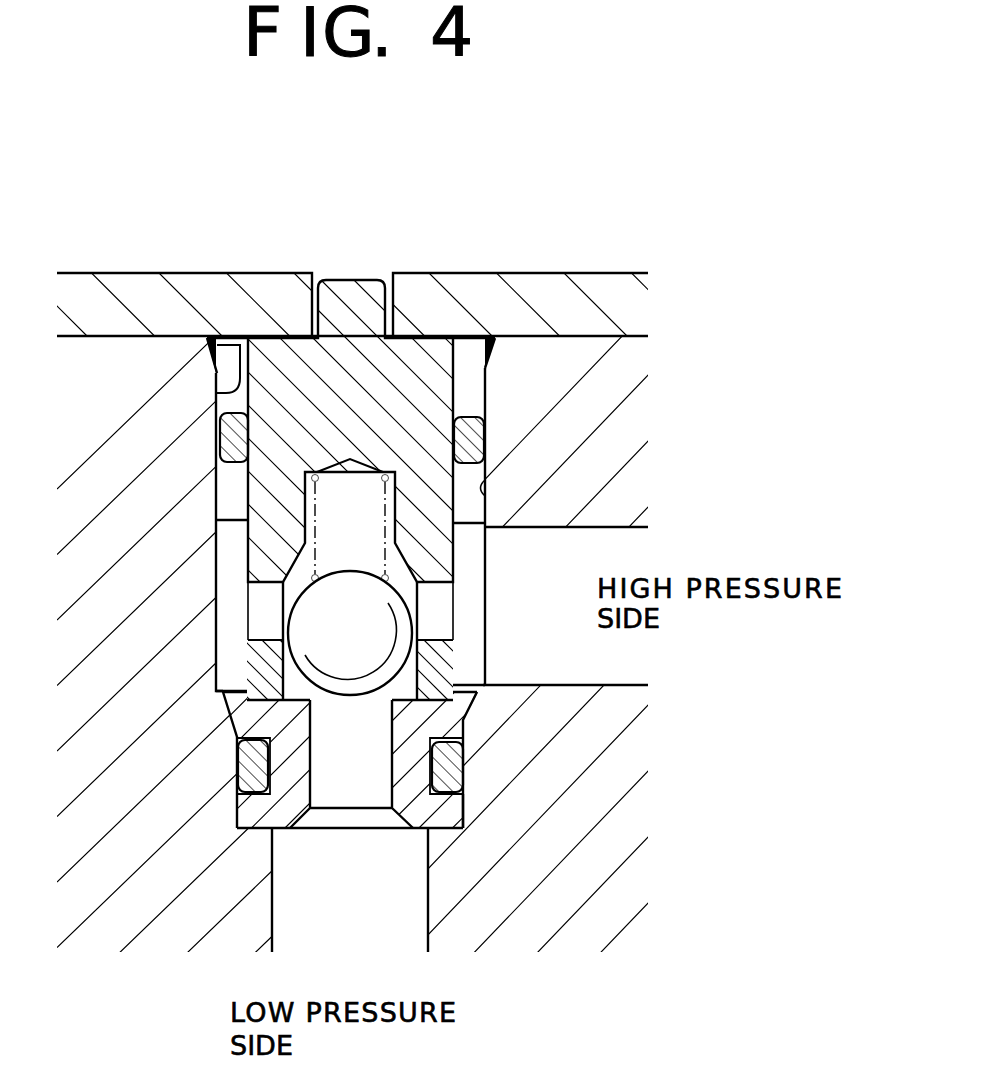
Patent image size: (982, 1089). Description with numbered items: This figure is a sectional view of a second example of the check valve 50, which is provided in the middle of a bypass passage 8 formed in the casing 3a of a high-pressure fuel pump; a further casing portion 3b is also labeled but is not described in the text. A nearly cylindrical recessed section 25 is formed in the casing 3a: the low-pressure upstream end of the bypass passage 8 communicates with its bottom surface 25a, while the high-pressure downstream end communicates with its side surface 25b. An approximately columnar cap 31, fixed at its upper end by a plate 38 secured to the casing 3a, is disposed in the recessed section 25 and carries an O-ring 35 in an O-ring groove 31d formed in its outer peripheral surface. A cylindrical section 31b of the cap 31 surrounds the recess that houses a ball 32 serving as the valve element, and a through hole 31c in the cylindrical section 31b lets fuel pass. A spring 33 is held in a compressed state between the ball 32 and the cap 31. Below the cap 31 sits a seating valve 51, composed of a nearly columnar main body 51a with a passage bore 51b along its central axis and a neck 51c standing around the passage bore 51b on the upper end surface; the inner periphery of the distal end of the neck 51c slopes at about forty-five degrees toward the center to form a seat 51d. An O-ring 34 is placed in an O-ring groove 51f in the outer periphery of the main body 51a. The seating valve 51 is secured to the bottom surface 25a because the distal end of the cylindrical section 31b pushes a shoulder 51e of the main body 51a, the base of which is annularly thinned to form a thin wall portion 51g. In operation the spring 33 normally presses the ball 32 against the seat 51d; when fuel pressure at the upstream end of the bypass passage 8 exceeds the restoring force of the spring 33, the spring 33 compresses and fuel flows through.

The casing 3a is at (623, 418).
The sleeve portion of housing 3b is at (222, 585).
The bypass passage 8 is at (407, 923).
The recessed section 25 is at (227, 393).
The bottom surface 25a is at (248, 808).
The side surface 25b is at (478, 490).
The cap 31 is at (238, 502).
The cylindrical section 31b is at (457, 544).
The through hole 31c is at (457, 599).
The O-ring groove 31d is at (487, 428).
The ball 32 is at (334, 570).
The spring 33 is at (341, 464).
The O-ring 34 is at (465, 782).
The O-ring 35 is at (487, 440).
The plate 38 is at (468, 272).
The check valve 50 is at (345, 278).
The seating valve 51 is at (424, 836).
The main body 51a is at (463, 818).
The passage bore 51b is at (388, 770).
The neck 51c is at (283, 673).
The seat 51d is at (302, 690).
The shoulder 51e is at (478, 693).
The O-ring groove 51f is at (465, 751).
The thin wall portion 51g is at (445, 688).